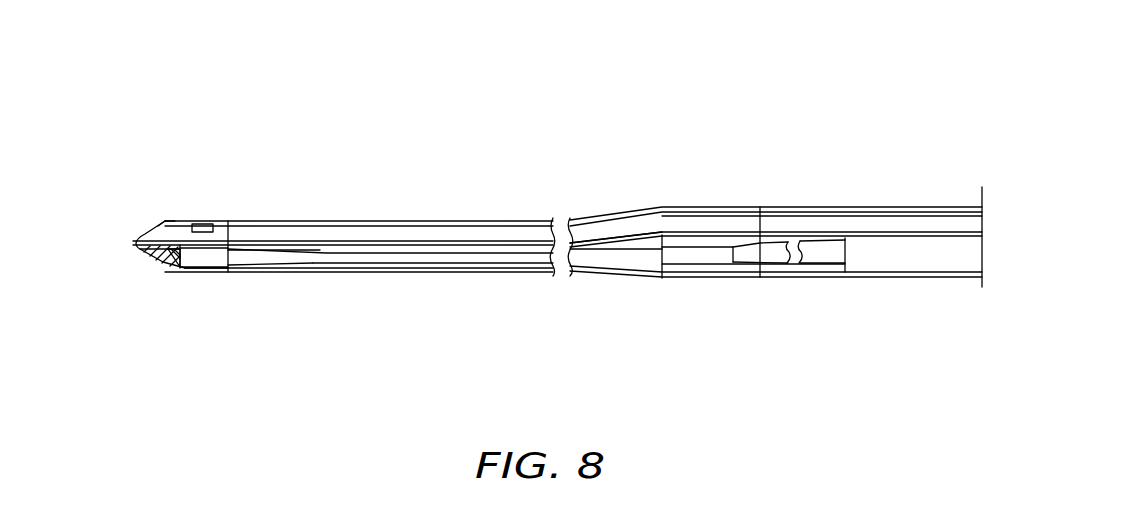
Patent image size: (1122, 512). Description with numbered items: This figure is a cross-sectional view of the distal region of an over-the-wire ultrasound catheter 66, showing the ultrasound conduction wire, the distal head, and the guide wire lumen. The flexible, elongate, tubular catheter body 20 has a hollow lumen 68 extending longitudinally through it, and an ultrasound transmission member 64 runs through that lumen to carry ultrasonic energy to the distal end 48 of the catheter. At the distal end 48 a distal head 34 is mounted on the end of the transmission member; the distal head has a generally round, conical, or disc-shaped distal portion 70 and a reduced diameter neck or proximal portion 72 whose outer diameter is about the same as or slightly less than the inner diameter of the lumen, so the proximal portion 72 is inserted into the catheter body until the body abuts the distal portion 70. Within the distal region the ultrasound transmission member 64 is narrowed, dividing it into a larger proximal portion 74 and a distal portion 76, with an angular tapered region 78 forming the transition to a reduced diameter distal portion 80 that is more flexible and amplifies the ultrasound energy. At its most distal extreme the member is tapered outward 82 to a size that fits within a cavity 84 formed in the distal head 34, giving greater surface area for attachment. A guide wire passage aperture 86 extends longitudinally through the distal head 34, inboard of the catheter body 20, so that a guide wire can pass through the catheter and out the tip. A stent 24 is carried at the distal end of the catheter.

The catheter body 20 is at (963, 206).
The stent 24 is at (962, 270).
The distal head 34 is at (169, 263).
The distal end 48 is at (852, 163).
The ultrasound transmission member 64 is at (433, 274).
The over-the-wire ultrasound catheter 66 is at (745, 95).
The lumen 68 is at (707, 264).
The distal portion 70 is at (177, 217).
The proximal portion 72 is at (230, 217).
The proximal portion 74 is at (898, 262).
The distal portion 76 is at (195, 258).
The tapered region 78 is at (825, 260).
The reduced diameter distal portion 80 is at (605, 256).
The outward taper 82 is at (310, 258).
The cavity 84 is at (213, 258).
The guide wire passage aperture 86 is at (140, 231).